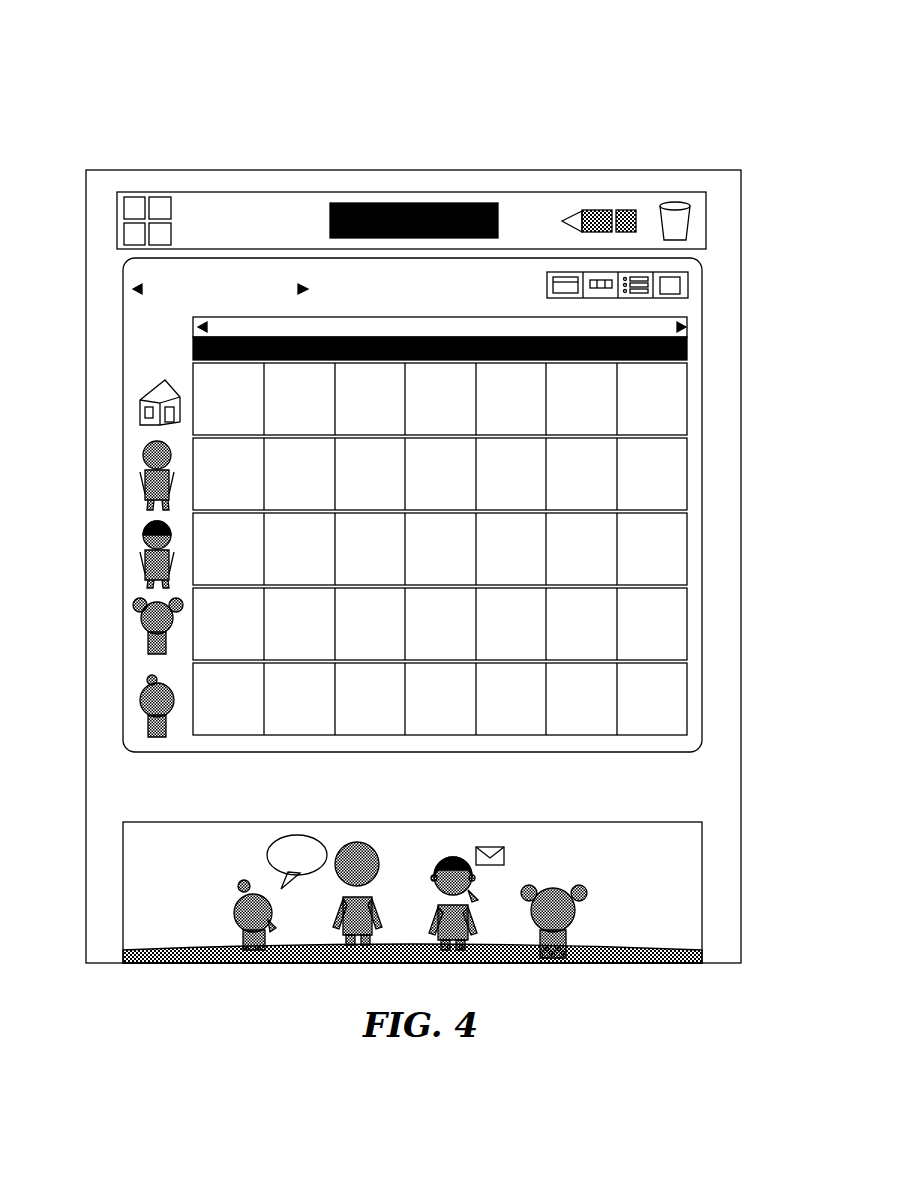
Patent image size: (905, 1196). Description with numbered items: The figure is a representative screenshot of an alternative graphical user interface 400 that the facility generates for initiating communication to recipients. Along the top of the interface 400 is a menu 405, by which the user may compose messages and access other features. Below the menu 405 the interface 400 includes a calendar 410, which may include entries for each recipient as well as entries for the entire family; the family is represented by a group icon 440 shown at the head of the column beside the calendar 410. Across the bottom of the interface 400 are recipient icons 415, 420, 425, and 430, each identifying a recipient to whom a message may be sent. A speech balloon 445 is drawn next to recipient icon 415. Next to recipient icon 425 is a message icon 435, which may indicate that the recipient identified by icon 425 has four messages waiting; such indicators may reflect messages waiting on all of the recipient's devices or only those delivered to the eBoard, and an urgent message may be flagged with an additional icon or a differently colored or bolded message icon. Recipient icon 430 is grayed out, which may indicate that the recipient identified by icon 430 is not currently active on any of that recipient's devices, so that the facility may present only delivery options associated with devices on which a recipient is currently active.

The graphical user interface 400 is at (668, 106).
The menu 405 is at (542, 192).
The calendar application window 410 is at (148, 752).
The recipient icon 415 is at (260, 880).
The recipient icon 420 is at (358, 842).
The recipient icon 425 is at (453, 856).
The recipient icon 430 is at (563, 888).
The message waiting icon 435 is at (500, 846).
The group icon 440 is at (164, 372).
The speech bubble 445 is at (302, 836).